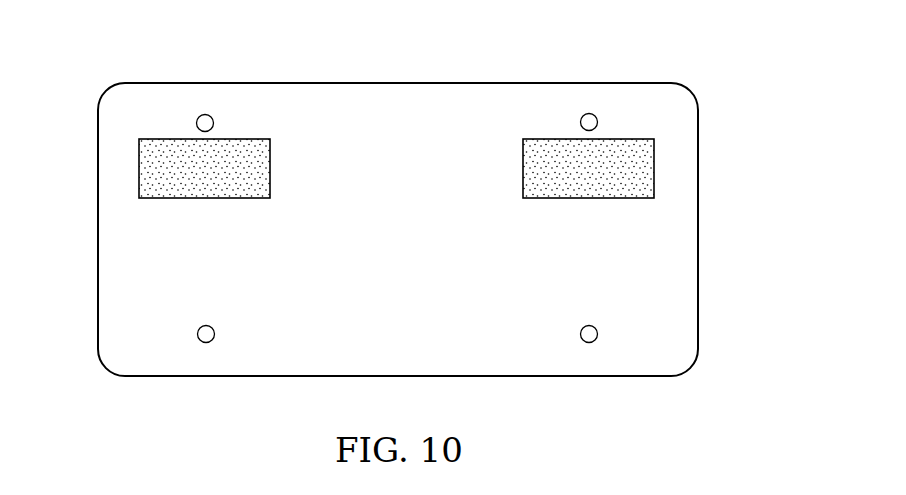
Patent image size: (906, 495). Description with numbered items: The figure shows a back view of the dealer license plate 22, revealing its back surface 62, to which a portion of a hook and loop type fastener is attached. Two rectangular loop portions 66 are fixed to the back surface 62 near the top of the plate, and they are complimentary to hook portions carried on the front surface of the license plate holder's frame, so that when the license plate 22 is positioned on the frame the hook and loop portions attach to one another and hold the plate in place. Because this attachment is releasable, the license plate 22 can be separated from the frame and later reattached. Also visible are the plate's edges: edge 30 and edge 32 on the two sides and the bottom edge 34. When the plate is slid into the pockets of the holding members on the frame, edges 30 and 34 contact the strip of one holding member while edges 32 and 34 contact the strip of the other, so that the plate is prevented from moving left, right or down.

The edge 30 is at (699, 237).
The dealer license plate 22 is at (112, 277).
The edge 32 is at (97, 214).
The edge 34 is at (305, 377).
The back surface 62 is at (393, 127).
The loop portions 66 is at (158, 166).